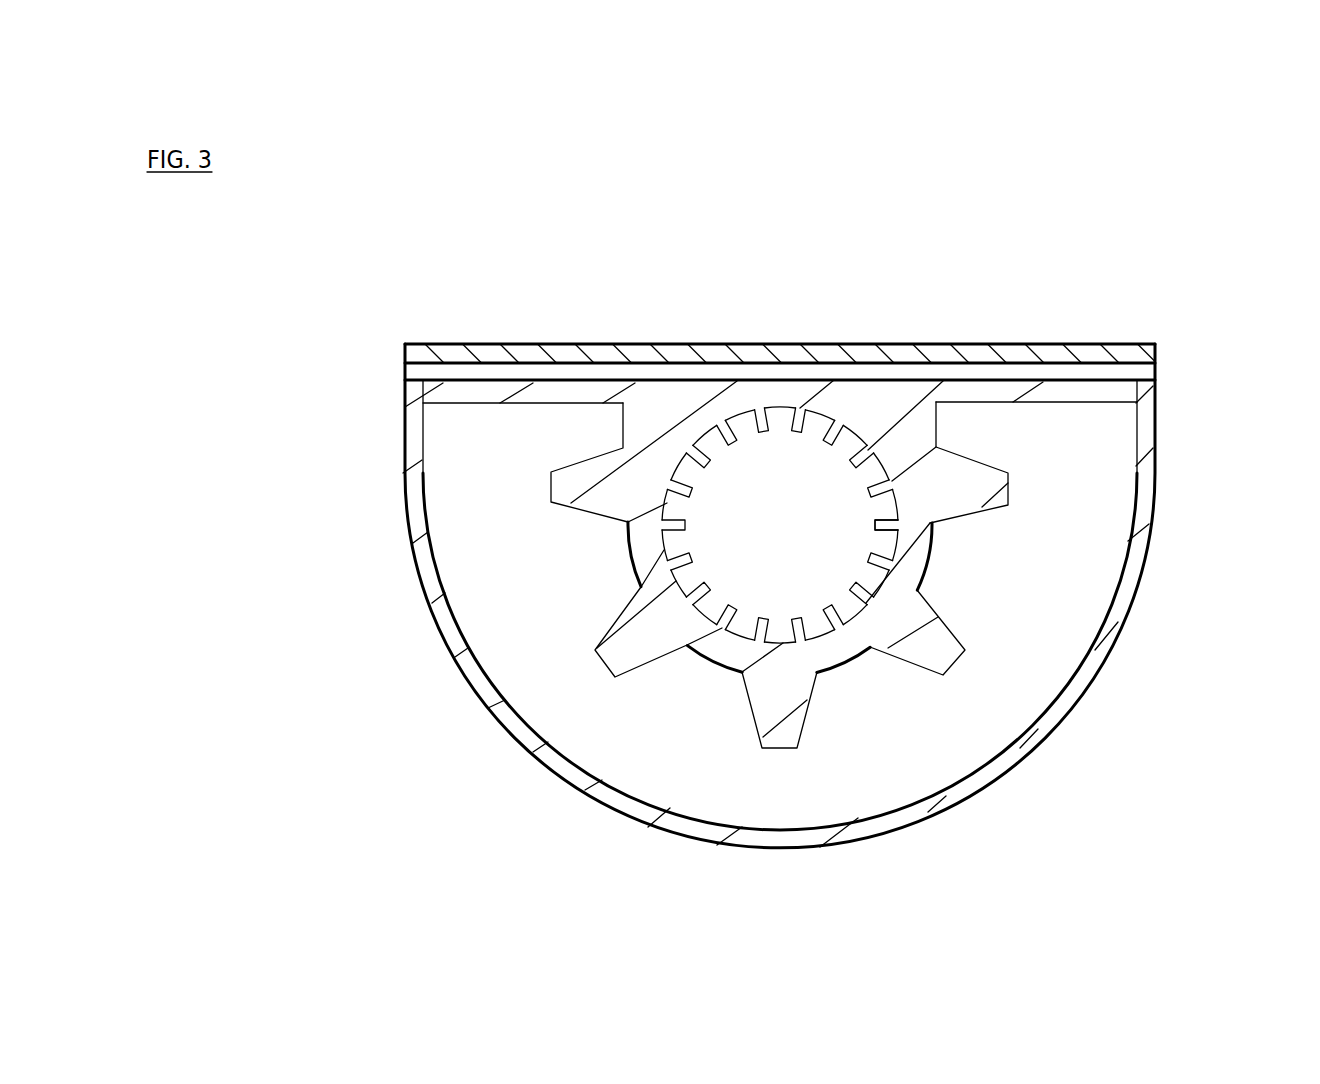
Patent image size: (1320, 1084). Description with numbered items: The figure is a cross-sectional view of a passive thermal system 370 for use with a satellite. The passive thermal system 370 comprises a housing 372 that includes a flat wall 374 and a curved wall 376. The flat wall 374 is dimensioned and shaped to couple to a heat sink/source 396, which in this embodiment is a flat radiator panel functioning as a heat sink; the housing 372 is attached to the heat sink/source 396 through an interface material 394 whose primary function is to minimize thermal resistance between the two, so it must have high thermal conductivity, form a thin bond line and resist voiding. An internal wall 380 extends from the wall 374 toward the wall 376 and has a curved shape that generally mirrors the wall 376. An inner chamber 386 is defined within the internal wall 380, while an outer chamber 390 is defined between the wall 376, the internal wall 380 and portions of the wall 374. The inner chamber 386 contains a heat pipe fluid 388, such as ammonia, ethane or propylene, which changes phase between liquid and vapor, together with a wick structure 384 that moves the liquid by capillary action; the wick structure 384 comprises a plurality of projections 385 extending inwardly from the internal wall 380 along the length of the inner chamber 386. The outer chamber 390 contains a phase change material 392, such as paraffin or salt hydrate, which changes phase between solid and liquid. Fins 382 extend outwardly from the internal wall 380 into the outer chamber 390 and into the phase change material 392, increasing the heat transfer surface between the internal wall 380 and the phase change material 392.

The passive thermal system 370 is at (325, 357).
The housing 372 is at (1153, 561).
The wall 374 is at (1097, 392).
The wall 376 is at (1123, 611).
The internal wall 380 is at (643, 552).
The fins 382 is at (598, 655).
The wick structure 384 is at (797, 452).
The projections 385 is at (878, 528).
The inner chamber 386 is at (803, 537).
The heat pipe fluid 388 is at (822, 487).
The outer chamber 390 is at (912, 746).
The phase change material 392 is at (1005, 690).
The interface material 394 is at (1140, 370).
The heat sink/source 396 is at (1010, 352).